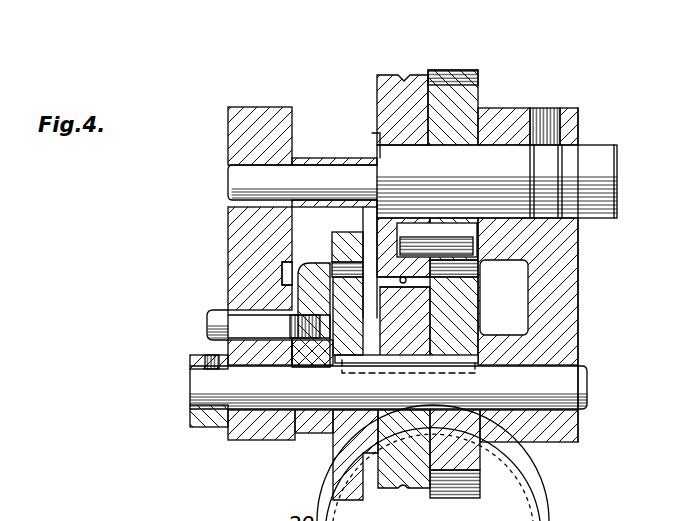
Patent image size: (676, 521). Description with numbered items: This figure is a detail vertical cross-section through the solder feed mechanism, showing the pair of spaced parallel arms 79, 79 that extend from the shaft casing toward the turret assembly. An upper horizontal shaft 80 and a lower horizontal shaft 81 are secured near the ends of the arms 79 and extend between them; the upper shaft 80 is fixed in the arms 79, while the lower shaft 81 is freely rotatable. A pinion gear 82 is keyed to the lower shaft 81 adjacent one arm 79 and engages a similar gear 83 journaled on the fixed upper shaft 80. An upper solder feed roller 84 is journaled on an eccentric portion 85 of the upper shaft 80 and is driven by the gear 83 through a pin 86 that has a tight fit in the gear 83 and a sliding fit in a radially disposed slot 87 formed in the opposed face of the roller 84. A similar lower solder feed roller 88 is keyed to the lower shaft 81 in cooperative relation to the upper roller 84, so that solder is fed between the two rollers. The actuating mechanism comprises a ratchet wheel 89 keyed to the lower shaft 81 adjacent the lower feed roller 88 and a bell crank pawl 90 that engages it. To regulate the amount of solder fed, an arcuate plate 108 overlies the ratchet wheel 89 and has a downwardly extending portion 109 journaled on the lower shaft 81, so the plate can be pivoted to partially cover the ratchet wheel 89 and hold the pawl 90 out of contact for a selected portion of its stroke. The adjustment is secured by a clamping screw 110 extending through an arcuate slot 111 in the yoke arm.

The arm 79 is at (240, 143).
The upper horizontal shaft 80 is at (498, 158).
The lower horizontal shaft 81 is at (282, 388).
The pinion gear 82 is at (468, 472).
The gear 83 is at (453, 88).
The upper solder feed roller 84 is at (378, 82).
The eccentric portion 85 is at (398, 163).
The pin 86 is at (477, 247).
The radially disposed slot 87 is at (417, 230).
The lower solder feed roller 88 is at (413, 330).
The ratchet wheel 89 is at (350, 460).
The pawl 90 is at (340, 243).
The arcuate plate 108 is at (300, 270).
The downwardly extending portion 109 is at (320, 348).
The clamping screw 110 is at (215, 318).
The arcuate slot 111 is at (230, 341).